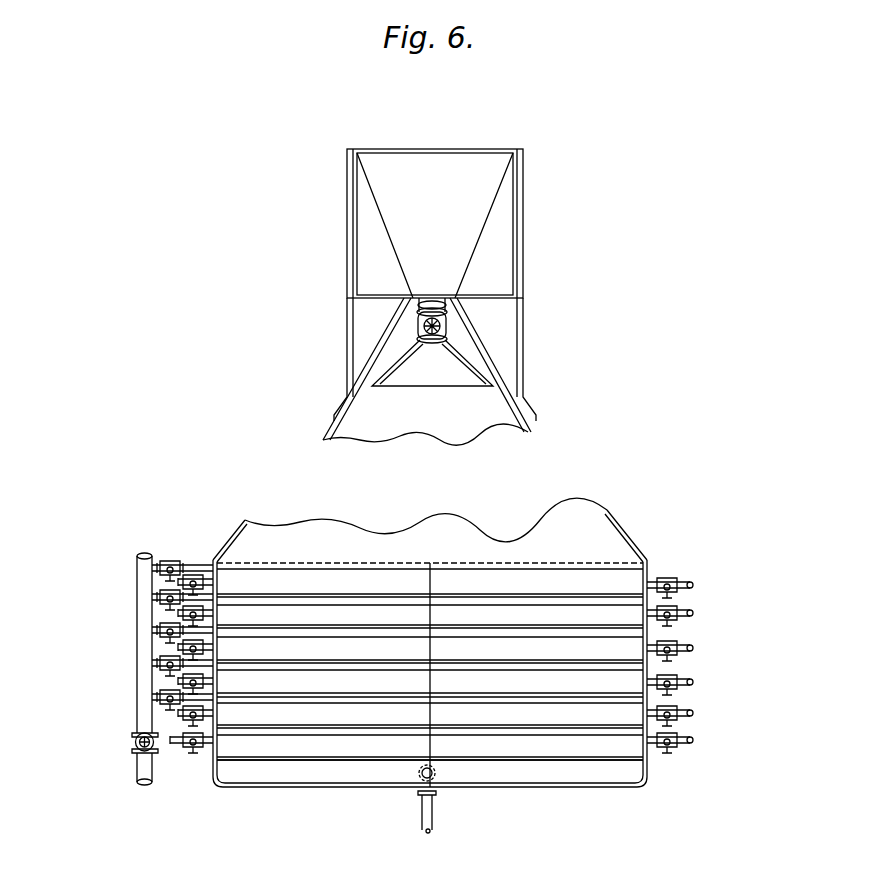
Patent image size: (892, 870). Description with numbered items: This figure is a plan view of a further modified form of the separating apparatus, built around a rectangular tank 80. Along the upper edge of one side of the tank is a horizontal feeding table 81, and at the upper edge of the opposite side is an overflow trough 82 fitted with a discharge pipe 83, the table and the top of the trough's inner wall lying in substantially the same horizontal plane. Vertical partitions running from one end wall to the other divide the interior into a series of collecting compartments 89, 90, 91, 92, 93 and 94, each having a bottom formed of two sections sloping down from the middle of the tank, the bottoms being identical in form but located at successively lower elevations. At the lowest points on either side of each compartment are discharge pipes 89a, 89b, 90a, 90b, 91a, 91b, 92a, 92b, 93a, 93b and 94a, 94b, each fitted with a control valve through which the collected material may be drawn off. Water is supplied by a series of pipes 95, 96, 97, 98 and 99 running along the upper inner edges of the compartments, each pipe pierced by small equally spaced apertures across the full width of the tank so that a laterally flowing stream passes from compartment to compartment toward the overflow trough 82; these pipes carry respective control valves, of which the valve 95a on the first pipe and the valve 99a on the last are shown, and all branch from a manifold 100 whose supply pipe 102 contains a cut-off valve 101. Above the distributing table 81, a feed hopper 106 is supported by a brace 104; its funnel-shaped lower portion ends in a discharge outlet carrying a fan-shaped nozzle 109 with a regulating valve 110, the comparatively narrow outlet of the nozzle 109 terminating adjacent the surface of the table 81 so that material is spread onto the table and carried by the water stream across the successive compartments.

The tank 80 is at (648, 772).
The feeding table 81 is at (473, 540).
The overflow trough 82 is at (430, 771).
The discharge pipe 83 is at (423, 808).
The collecting compartment 89 is at (536, 583).
The collecting compartment 90 is at (536, 616).
The collecting compartment 91 is at (536, 649).
The collecting compartment 92 is at (536, 683).
The collecting compartment 93 is at (536, 715).
The collecting compartment 94 is at (536, 745).
The supply pipe 95 is at (156, 581).
The feed pipe 96 is at (152, 600).
The feed pipe 97 is at (152, 632).
The feed pipe 98 is at (152, 665).
The feed pipe 99 is at (152, 697).
The discharge pipe 89a is at (193, 575).
The discharge pipe 90a is at (195, 616).
The discharge pipe 91a is at (195, 650).
The discharge pipe 92a is at (195, 684).
The discharge pipe 93a is at (195, 716).
The discharge pipe 94a is at (193, 755).
The control valve 95a is at (170, 560).
The control valve 99a is at (167, 712).
The discharge pipe 89b is at (739, 588).
The discharge pipe 90b is at (775, 616).
The discharge pipe 91b is at (742, 651).
The discharge pipe 92b is at (772, 684).
The discharge pipe 93b is at (742, 716).
The discharge pipe 94b is at (775, 744).
The manifold 100 is at (138, 554).
The cut-off valve 101 is at (130, 742).
The supply pipe 102 is at (137, 778).
The brace 104 is at (347, 326).
The feed hopper 106 is at (470, 172).
The fan-shaped nozzle 109 is at (465, 378).
The regulating valve 110 is at (447, 318).